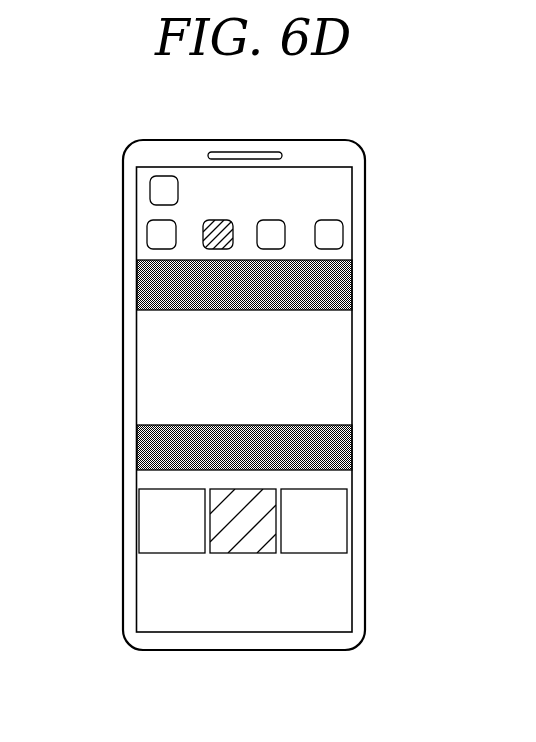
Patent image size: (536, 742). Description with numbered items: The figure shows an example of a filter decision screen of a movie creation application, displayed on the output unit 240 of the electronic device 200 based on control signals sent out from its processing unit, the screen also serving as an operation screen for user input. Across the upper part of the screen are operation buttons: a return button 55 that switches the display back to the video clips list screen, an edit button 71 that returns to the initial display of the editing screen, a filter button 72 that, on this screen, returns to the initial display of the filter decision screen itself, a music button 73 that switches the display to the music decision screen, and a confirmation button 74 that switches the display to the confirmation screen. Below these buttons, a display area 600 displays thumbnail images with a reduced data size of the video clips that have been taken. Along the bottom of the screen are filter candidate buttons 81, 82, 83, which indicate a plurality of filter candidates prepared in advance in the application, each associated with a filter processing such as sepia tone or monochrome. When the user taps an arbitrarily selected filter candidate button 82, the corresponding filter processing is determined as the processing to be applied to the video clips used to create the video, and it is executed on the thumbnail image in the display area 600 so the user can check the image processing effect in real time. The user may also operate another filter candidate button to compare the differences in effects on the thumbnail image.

The electronic device 200 is at (318, 140).
The output unit 240 is at (348, 195).
The return button 55 is at (160, 192).
The edit button 71 is at (158, 237).
The filter button 72 is at (217, 227).
The music button 73 is at (272, 227).
The confirmation button 74 is at (327, 227).
The display area 600 is at (180, 368).
The filter candidate button 81 is at (165, 542).
The filter candidate button 82 is at (238, 544).
The filter candidate button 83 is at (317, 541).